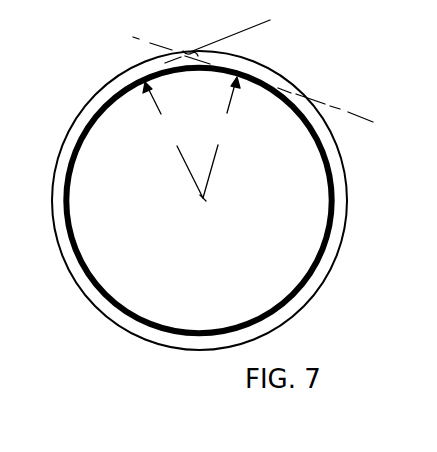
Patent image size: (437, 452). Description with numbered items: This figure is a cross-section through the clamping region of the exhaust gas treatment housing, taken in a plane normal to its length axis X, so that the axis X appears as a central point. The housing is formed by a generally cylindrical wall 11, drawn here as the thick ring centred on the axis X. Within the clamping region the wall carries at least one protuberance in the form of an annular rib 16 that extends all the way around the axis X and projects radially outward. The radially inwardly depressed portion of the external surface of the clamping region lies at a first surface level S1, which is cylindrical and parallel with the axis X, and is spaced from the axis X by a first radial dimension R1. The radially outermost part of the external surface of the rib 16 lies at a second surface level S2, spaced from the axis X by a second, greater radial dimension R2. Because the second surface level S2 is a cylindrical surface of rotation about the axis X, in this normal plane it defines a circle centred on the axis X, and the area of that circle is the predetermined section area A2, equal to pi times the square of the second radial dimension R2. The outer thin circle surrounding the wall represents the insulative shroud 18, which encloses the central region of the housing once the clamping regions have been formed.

The cylindrical wall 11 is at (215, 210).
The annular rib 16 is at (117, 324).
The insulative shroud 18 is at (215, 200).
The first surface level S1 is at (358, 89).
The second surface level S2 is at (217, 36).
The first radial dimension R1 is at (223, 137).
The second radial dimension R2 is at (173, 140).
The length axis X is at (208, 198).
The section area A2 is at (157, 229).